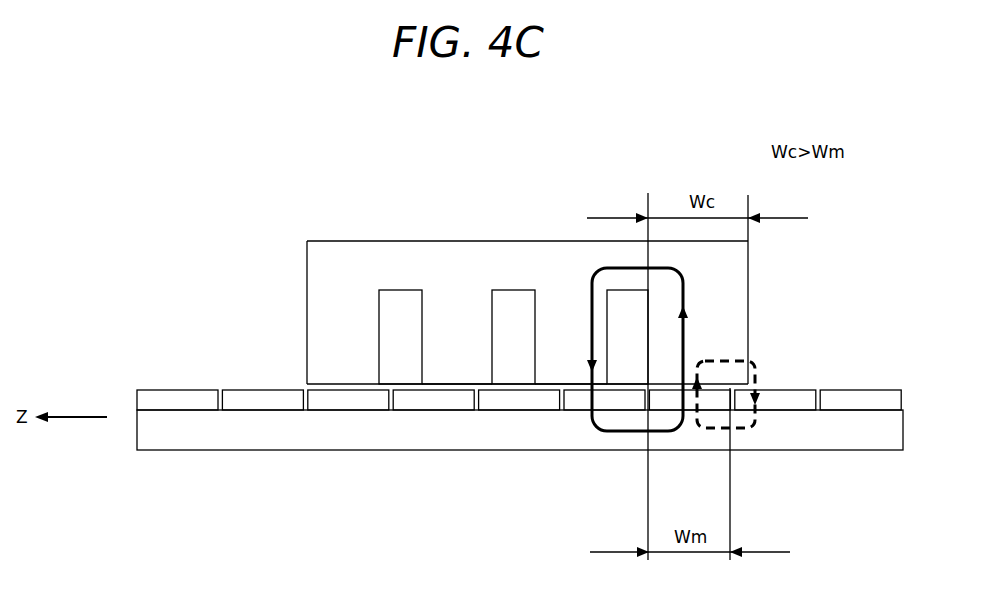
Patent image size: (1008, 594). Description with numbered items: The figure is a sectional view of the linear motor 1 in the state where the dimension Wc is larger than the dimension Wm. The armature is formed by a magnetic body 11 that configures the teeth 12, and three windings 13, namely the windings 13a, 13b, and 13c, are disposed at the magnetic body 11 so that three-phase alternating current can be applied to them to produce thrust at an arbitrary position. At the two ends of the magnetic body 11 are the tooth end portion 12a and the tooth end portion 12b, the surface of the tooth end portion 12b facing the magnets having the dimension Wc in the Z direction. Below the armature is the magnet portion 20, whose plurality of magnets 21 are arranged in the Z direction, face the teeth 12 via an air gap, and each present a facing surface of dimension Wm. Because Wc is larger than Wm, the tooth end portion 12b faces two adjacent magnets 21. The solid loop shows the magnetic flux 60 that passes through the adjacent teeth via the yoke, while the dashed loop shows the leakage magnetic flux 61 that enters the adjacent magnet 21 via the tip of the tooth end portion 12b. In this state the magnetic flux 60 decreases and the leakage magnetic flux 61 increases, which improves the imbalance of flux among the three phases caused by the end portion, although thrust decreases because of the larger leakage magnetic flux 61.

The linear motor 1 is at (298, 158).
The magnetic body of the armature 11 is at (323, 241).
The teeth 12 is at (560, 357).
The tooth end portion 12a is at (325, 315).
The tooth end portion 12b is at (732, 278).
The windings 13 is at (589, 153).
The winding 13a is at (401, 298).
The winding 13b is at (511, 298).
The winding 13c is at (626, 300).
The magnet portion 20 is at (858, 430).
The magnets 21 is at (782, 400).
The magnetic flux 60 is at (685, 337).
The leakage magnetic flux 61 is at (762, 377).